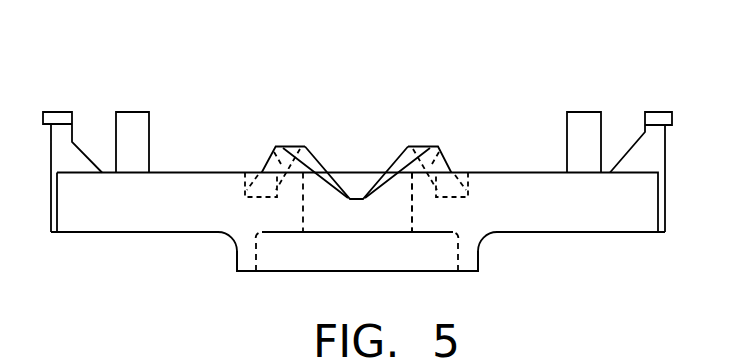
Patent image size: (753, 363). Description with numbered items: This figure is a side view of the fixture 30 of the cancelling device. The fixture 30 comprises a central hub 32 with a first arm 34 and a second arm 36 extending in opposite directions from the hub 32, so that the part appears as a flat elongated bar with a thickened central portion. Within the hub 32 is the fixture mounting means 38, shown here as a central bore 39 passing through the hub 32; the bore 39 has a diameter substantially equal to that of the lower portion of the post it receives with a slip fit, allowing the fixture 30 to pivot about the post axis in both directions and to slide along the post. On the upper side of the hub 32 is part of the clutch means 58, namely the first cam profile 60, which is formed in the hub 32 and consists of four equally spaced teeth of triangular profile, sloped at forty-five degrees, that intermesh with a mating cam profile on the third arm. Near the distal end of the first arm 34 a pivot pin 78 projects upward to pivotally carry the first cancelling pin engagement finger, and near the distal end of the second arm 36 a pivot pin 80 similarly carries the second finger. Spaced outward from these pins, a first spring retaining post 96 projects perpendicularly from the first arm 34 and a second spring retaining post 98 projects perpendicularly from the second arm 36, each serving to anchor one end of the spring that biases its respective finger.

The fixture 30 is at (478, 72).
The central hub 32 is at (235, 263).
The first arm 34 is at (95, 232).
The second arm 36 is at (612, 232).
The fixture mounting means 38 is at (305, 273).
The central bore 39 is at (412, 215).
The clutch means 58 is at (325, 112).
The first cam profile 60 is at (393, 152).
The pivot pin 78 is at (137, 133).
The pivot pin 80 is at (585, 127).
The first spring retaining post 96 is at (78, 118).
The second spring retaining post 98 is at (645, 118).